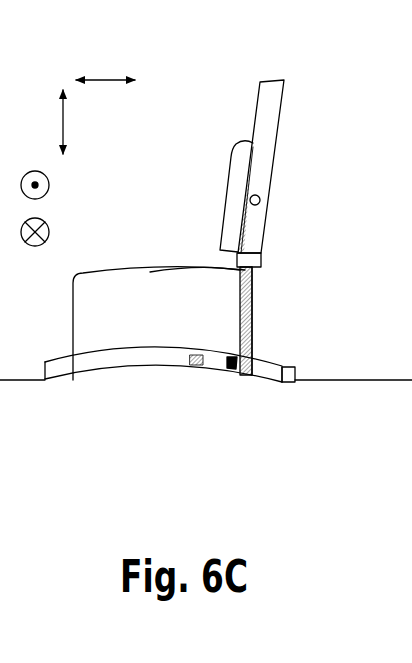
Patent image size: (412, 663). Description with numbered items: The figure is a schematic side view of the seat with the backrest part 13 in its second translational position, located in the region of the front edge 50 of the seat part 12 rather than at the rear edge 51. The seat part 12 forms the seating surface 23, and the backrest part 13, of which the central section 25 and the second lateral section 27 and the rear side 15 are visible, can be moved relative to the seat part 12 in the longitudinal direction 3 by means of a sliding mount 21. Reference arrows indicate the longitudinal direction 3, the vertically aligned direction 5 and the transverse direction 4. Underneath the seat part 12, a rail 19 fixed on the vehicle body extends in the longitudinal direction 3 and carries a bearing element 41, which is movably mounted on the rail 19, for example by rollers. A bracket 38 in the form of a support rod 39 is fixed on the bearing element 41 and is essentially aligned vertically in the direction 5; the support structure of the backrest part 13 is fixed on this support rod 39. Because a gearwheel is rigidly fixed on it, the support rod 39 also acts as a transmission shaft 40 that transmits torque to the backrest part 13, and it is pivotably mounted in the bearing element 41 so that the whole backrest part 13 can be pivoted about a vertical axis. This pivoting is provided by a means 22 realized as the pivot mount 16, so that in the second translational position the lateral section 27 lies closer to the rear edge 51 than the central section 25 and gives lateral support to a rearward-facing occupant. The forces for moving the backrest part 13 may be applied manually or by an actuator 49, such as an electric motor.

The longitudinal direction 3 is at (108, 80).
The vertically aligned direction 5 is at (64, 122).
The transverse direction 4 is at (49, 185).
The seat part 12 is at (279, 343).
The backrest part 13 is at (265, 166).
The rear side 15 is at (270, 190).
The pivot mount 16 is at (192, 399).
The rail 19 is at (287, 372).
The sliding mount 21 is at (220, 415).
The means 22 is at (192, 399).
The seating surface 23 is at (162, 268).
The central section 25 is at (268, 101).
The second lateral section 27 is at (231, 174).
The bracket 38 is at (317, 314).
The support rod 39 is at (317, 314).
The transmission shaft 40 is at (245, 272).
The bearing element 41 is at (232, 371).
The actuator 49 is at (265, 370).
The front edge 50 is at (70, 310).
The rear edge 51 is at (255, 307).